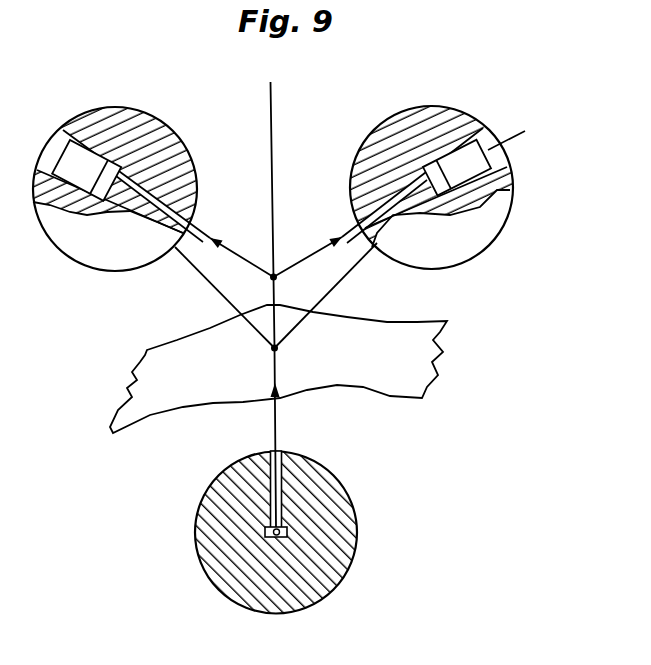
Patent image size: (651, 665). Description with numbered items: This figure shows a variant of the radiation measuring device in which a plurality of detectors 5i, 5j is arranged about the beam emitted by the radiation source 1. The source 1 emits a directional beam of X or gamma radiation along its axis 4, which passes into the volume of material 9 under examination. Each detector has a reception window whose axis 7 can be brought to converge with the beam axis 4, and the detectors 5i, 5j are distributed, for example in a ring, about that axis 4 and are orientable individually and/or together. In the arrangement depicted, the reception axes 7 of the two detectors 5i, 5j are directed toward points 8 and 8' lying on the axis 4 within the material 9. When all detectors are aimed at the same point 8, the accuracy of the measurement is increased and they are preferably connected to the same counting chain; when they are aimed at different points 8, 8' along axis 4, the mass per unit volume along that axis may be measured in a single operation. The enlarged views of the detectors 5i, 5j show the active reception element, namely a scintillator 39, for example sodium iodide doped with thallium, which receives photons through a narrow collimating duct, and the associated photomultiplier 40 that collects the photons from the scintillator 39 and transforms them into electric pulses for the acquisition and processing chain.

The X or gamma radiation source 1 is at (372, 546).
The axis of the radiation beam 4 is at (278, 430).
The detector 5i is at (100, 115).
The detector 5j is at (351, 137).
The axis of the reception window 7 is at (241, 256).
The convergence point 8 is at (287, 283).
The convergence point 8' is at (296, 358).
The volume of material 9 is at (423, 362).
The scintillator 39 is at (452, 188).
The photomultiplier 40 is at (490, 159).